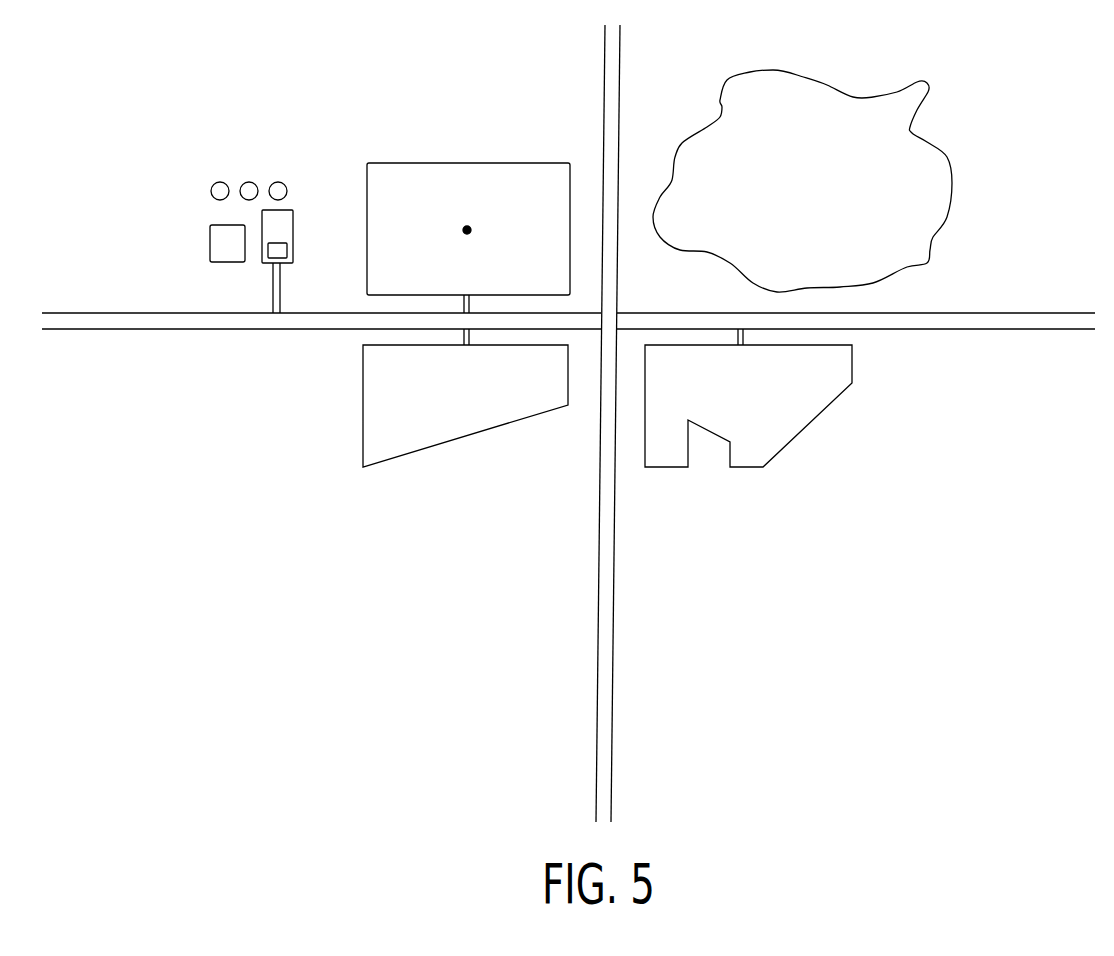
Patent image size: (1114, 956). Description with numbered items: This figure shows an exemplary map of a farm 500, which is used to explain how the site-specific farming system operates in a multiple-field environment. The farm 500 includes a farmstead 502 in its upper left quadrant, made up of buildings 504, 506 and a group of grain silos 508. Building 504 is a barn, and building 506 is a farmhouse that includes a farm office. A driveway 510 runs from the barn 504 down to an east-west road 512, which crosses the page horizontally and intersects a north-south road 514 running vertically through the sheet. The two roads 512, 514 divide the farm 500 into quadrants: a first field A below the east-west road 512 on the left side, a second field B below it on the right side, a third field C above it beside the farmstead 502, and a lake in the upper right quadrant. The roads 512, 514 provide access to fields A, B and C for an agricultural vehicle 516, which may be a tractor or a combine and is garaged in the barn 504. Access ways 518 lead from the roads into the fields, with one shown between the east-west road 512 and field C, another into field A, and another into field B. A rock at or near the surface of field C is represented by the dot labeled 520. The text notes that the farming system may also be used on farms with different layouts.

The farm 500 is at (324, 556).
The farmstead 502 is at (285, 148).
The building (barn) 504 is at (294, 218).
The building (farmhouse) 506 is at (210, 243).
The grain silos 508 is at (213, 185).
The driveway 510 is at (273, 288).
The east-west road 512 is at (965, 312).
The north-south road 514 is at (607, 78).
The agricultural vehicle 516 is at (290, 247).
The access ways 518 is at (462, 338).
The rock 520 is at (468, 232).